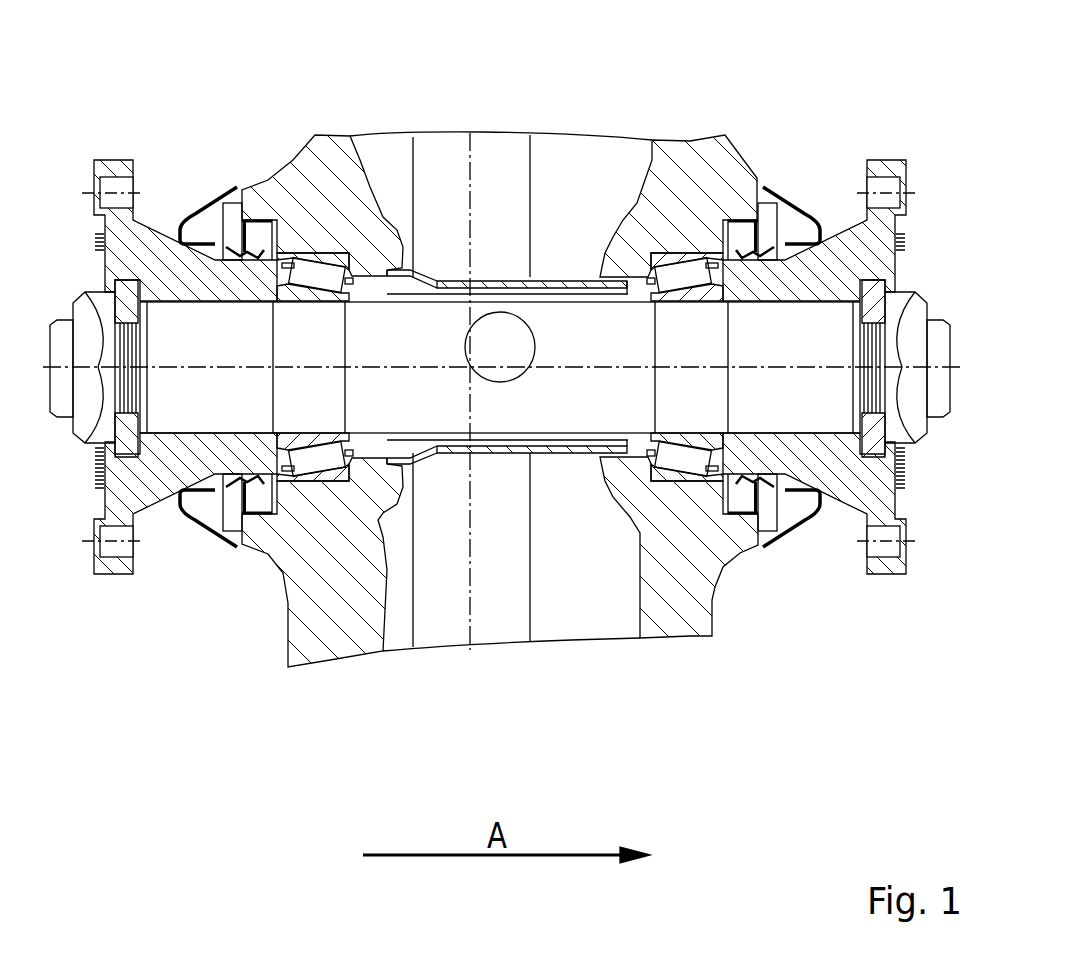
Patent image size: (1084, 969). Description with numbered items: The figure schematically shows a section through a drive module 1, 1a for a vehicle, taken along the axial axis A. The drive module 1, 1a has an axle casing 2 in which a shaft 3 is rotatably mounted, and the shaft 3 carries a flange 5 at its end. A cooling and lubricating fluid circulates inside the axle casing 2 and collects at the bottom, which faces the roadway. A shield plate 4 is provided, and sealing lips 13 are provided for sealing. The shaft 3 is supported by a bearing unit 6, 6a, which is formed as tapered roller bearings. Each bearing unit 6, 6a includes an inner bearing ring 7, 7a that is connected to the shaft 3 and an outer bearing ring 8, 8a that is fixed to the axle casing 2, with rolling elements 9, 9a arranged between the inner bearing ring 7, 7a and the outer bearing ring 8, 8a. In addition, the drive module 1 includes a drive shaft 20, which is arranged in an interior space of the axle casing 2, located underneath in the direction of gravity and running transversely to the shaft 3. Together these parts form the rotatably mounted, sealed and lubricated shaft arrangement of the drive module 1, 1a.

The drive module 1 is at (500, 341).
The drive module 1a is at (499, 213).
The axle casing 2 is at (905, 325).
The shaft 3 is at (803, 347).
The shield plate 4 is at (806, 205).
The flange 5 is at (102, 332).
The bearing unit 6 is at (335, 238).
The bearing unit 6a is at (655, 243).
The inner bearing ring 7 is at (297, 432).
The inner bearing ring 7a is at (702, 433).
The outer bearing ring 8 is at (313, 200).
The outer bearing ring 8a is at (698, 235).
The rolling elements 9 is at (320, 457).
The rolling elements 9a is at (682, 460).
The sealing lips 13 is at (238, 198).
The drive shaft 20 is at (500, 348).